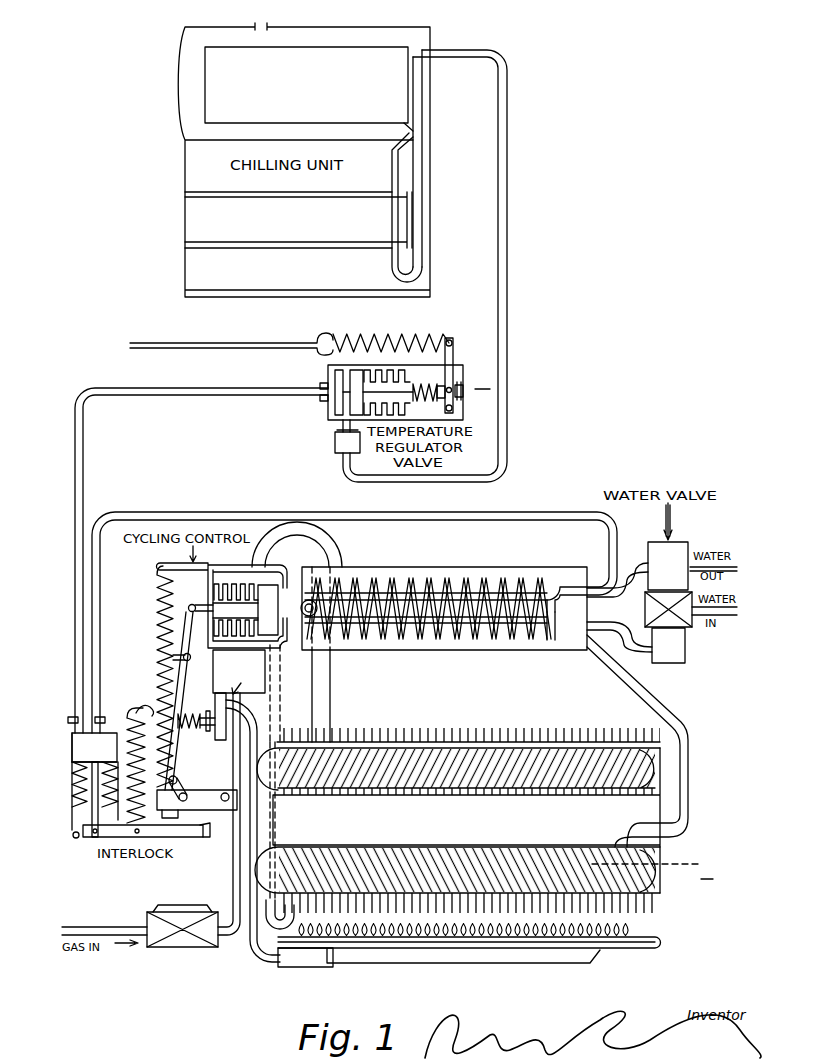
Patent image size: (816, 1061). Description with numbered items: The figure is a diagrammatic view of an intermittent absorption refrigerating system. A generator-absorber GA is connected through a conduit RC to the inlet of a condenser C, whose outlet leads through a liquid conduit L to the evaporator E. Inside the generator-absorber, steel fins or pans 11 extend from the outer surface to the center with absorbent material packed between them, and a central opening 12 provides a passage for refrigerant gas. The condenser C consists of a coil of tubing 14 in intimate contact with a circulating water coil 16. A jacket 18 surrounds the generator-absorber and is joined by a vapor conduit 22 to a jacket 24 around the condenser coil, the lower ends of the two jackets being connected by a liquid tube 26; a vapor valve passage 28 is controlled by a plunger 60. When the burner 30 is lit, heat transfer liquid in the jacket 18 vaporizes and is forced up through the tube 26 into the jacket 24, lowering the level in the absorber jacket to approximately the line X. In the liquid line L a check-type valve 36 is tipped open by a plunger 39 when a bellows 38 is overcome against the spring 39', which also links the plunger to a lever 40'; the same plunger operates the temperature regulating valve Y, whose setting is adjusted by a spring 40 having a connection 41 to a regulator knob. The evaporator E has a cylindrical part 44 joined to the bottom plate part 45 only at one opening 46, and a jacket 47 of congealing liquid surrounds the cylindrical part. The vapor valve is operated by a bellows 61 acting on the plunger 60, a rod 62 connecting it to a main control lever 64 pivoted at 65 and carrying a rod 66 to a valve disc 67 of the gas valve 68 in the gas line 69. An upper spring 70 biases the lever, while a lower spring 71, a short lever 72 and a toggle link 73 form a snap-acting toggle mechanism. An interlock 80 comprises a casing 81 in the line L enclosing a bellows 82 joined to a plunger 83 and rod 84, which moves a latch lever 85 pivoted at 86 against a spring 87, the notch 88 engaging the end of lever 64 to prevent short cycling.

The steel fins or pans 11 is at (627, 883).
The opening 12 is at (523, 848).
The coil of tubing 14 is at (490, 580).
The circulating water coil 16 is at (560, 595).
The jacket 18 is at (505, 745).
The vapor conduit 22 is at (322, 695).
The jacket 24 is at (300, 572).
The tube 26 is at (270, 683).
The valve passage 28 is at (280, 600).
The burner 30 is at (607, 937).
The valve 36 is at (340, 423).
The bellows 38 is at (398, 370).
The plunger 39 is at (377, 359).
The spring 39' is at (457, 367).
The spring 40 is at (391, 327).
The lever 40' is at (470, 358).
The connection 41 is at (305, 343).
The cylindrical part 44 is at (375, 52).
The bottom or plate part 45 is at (335, 243).
The opening 46 is at (413, 125).
The jacket 47 is at (213, 35).
The plunger 60 is at (265, 588).
The bellows 61 is at (228, 583).
The rod 62 is at (213, 604).
The lever 64 is at (186, 623).
The pivot 65 is at (170, 657).
The rod 66 is at (188, 730).
The valve disc or diaphragm 67 is at (212, 742).
The gas valve 68 is at (232, 718).
The gas line 69 is at (235, 845).
The upper spring 70 is at (160, 675).
The lower spring 71 is at (150, 710).
The short lever 72 is at (212, 802).
The toggle link 73 is at (195, 765).
The interlock 80 is at (40, 793).
The casing 81 is at (72, 757).
The bellows 82 is at (75, 800).
The plunger 83 is at (83, 740).
The rod 84 is at (92, 800).
The lever or latch 85 is at (105, 830).
The pivot 86 is at (75, 838).
The spring 87 is at (135, 805).
The notch 88 is at (208, 840).
The evaporator E is at (318, 92).
The conduit L is at (508, 233).
The temperature regulating valve Y is at (482, 379).
The condenser C is at (502, 645).
The generator-absorber GA is at (362, 831).
The conduit RC is at (685, 725).
The line X is at (652, 870).